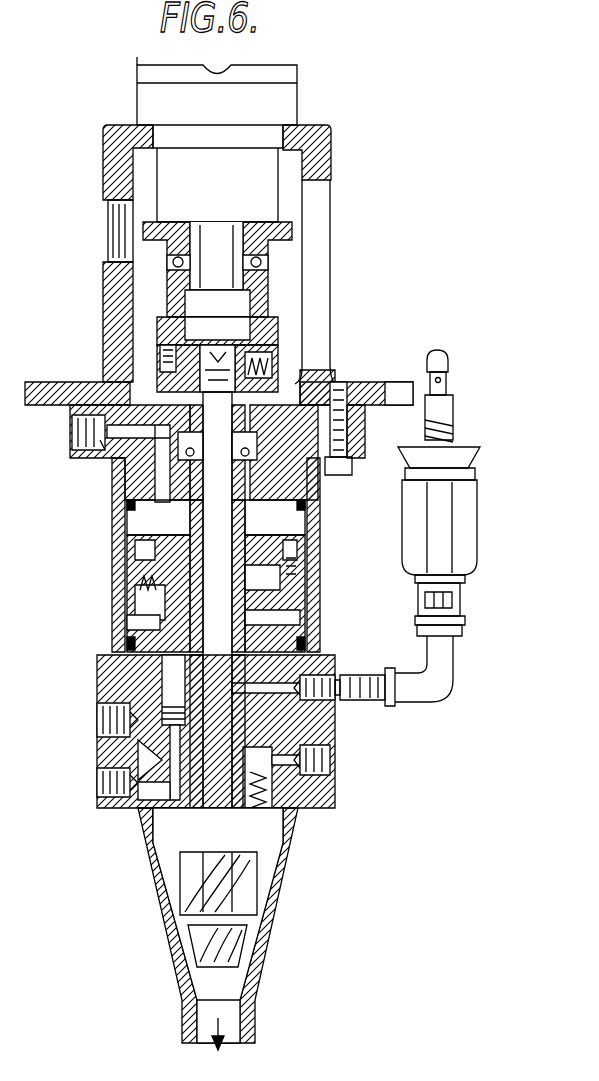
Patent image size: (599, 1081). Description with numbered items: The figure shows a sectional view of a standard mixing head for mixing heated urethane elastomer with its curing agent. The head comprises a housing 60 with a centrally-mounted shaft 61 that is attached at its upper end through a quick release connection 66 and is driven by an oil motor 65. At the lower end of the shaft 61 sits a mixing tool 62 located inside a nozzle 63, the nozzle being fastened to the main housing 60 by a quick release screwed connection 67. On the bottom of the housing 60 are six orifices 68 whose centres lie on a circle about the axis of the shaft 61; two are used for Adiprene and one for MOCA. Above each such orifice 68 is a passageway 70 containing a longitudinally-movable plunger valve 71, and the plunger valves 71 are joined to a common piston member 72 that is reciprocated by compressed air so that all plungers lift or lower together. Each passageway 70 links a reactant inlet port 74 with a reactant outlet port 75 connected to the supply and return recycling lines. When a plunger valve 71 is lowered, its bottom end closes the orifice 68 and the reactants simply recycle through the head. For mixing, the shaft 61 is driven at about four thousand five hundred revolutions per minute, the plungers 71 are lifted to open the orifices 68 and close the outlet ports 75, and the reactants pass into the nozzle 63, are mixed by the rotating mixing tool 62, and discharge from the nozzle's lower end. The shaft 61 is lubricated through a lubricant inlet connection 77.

The housing 60 is at (293, 666).
The shaft 61 is at (222, 729).
The mixing tool 62 is at (185, 880).
The nozzle 63 is at (268, 925).
The oil motor 65 is at (278, 107).
The quick release connection 66 is at (222, 397).
The quick release screwed connection 67 is at (288, 822).
The orifices 68 is at (165, 832).
The passageway 70 is at (178, 744).
The plunger valve 71 is at (178, 778).
The piston member 72 is at (300, 581).
The reactant inlet port 74 is at (100, 785).
The reactant outlet port 75 is at (100, 718).
The lubricant inlet connection 77 is at (440, 690).